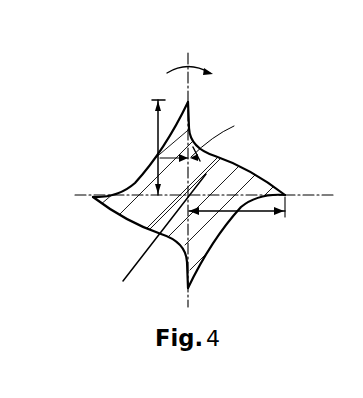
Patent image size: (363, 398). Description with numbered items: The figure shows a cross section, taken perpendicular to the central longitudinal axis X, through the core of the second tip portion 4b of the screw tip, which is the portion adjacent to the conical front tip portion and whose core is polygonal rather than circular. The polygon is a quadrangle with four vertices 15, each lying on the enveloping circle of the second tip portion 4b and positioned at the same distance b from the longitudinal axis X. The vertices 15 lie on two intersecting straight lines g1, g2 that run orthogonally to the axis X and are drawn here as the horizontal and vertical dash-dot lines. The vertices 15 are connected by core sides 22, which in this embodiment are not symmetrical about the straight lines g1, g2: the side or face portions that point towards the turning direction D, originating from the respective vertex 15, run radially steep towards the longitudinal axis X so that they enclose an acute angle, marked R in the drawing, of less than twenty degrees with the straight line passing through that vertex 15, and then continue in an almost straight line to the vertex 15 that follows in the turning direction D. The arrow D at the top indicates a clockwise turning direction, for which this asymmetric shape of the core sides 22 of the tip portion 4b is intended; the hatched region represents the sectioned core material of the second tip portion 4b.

The vertex 15 is at (189, 101).
The core side 22 is at (140, 178).
The second tip portion 4b is at (236, 176).
The straight line g1 is at (189, 54).
The straight line g2 is at (90, 199).
The turning direction D is at (200, 74).
The distance b is at (157, 133).
The radius R is at (212, 141).
The central longitudinal axis X is at (159, 239).